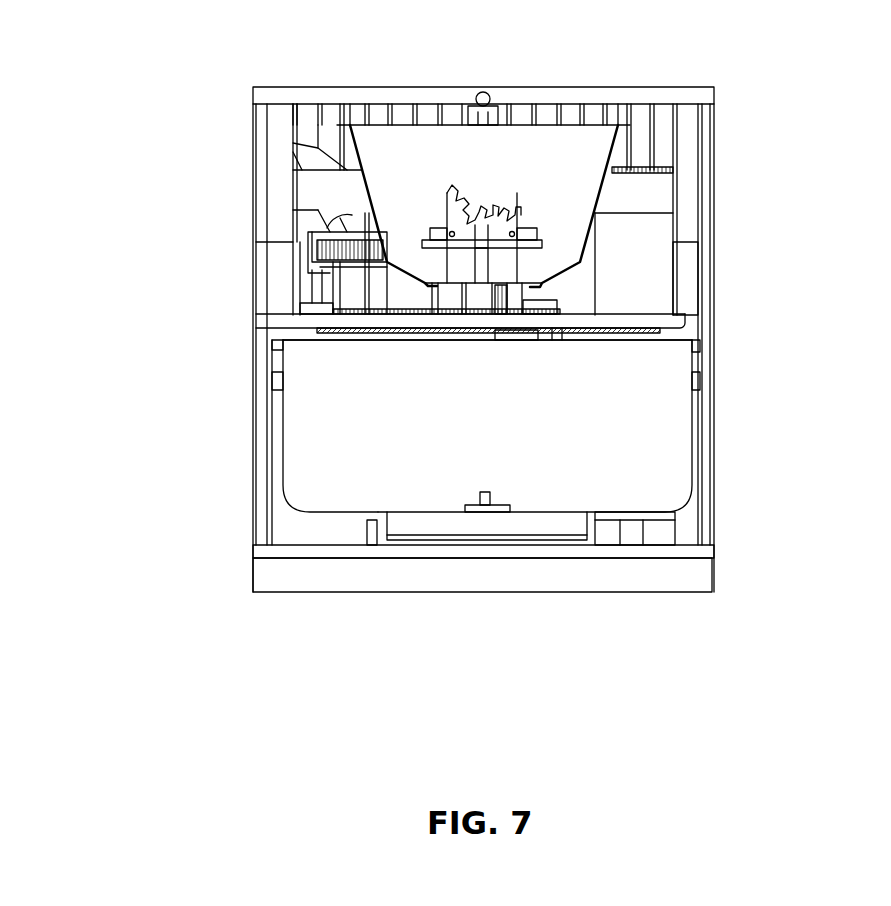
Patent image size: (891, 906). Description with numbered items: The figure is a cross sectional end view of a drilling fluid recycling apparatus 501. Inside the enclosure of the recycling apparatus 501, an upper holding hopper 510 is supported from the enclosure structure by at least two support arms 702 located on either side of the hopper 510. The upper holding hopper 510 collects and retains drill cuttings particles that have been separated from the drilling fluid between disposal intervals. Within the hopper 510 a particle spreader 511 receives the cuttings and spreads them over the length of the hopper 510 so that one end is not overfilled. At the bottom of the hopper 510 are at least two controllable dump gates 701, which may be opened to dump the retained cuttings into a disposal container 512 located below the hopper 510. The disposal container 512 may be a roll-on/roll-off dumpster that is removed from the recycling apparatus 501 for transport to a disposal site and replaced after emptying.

The drilling fluid recycling apparatus 501 is at (552, 339).
The upper holding hopper 510 is at (595, 190).
The particle spreader 511 is at (484, 88).
The disposal container 512 is at (564, 426).
The controllable dump gates 701 is at (588, 238).
The support arms 702 is at (252, 194).